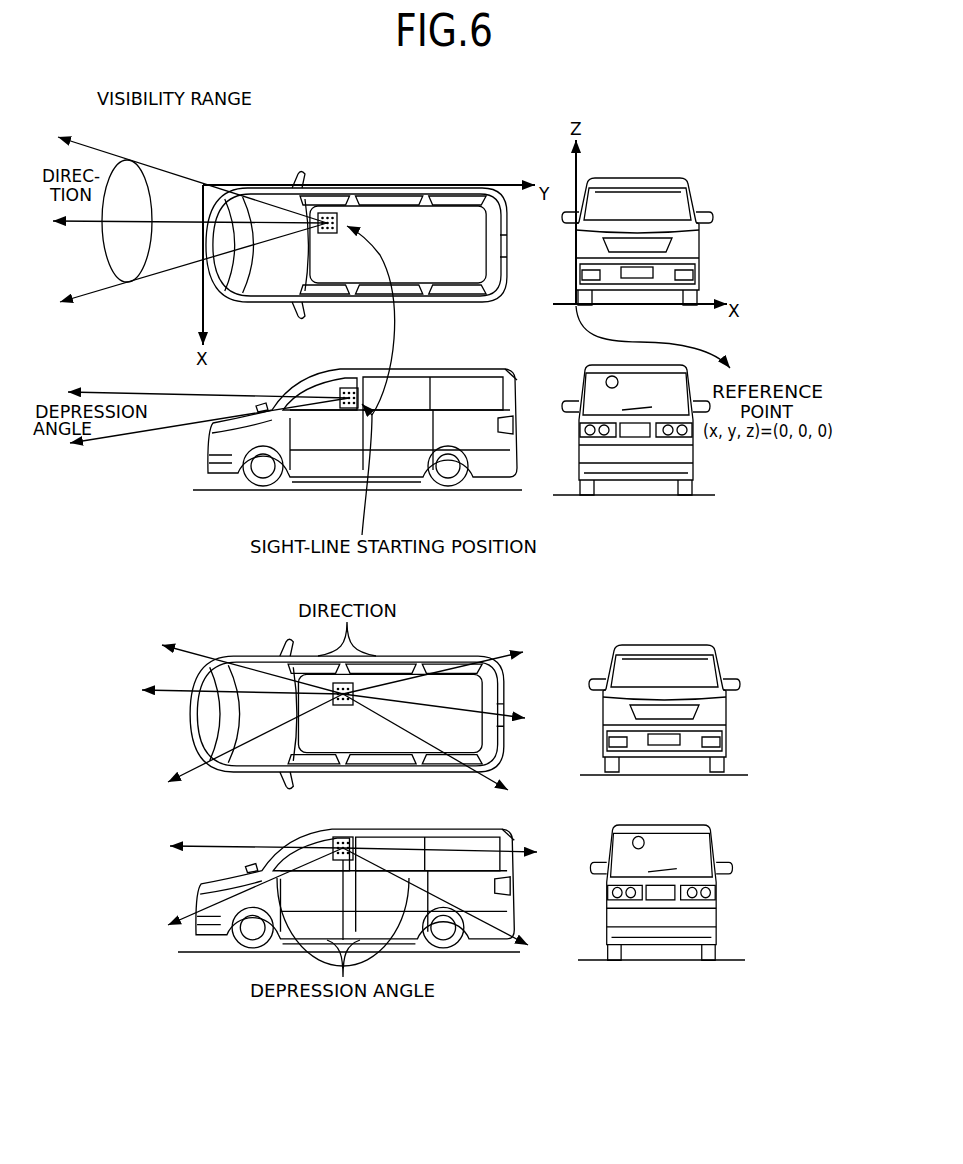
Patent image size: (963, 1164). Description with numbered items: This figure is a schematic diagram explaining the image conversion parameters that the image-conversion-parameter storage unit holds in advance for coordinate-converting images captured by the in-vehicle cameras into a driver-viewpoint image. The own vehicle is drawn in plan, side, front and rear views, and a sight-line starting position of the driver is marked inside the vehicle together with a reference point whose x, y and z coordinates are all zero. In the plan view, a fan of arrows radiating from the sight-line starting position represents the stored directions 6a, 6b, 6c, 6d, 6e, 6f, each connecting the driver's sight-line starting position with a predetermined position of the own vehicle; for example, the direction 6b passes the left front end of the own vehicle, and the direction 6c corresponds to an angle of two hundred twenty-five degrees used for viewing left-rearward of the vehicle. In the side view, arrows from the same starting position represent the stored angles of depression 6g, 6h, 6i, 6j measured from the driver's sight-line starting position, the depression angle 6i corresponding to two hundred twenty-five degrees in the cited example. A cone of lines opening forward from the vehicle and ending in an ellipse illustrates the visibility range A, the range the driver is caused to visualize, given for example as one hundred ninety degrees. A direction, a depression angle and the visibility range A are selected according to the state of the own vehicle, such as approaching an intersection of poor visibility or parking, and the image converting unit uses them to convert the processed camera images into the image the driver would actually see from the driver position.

The visibility range A is at (130, 173).
The direction 6a is at (230, 694).
The direction 6b is at (242, 746).
The direction 6c is at (440, 749).
The direction 6d is at (446, 714).
The direction 6e is at (446, 665).
The direction 6f is at (242, 662).
The angle of depression 6g is at (244, 851).
The angle of depression 6h is at (244, 895).
The angle of depression 6i is at (447, 908).
The angle of depression 6j is at (451, 856).